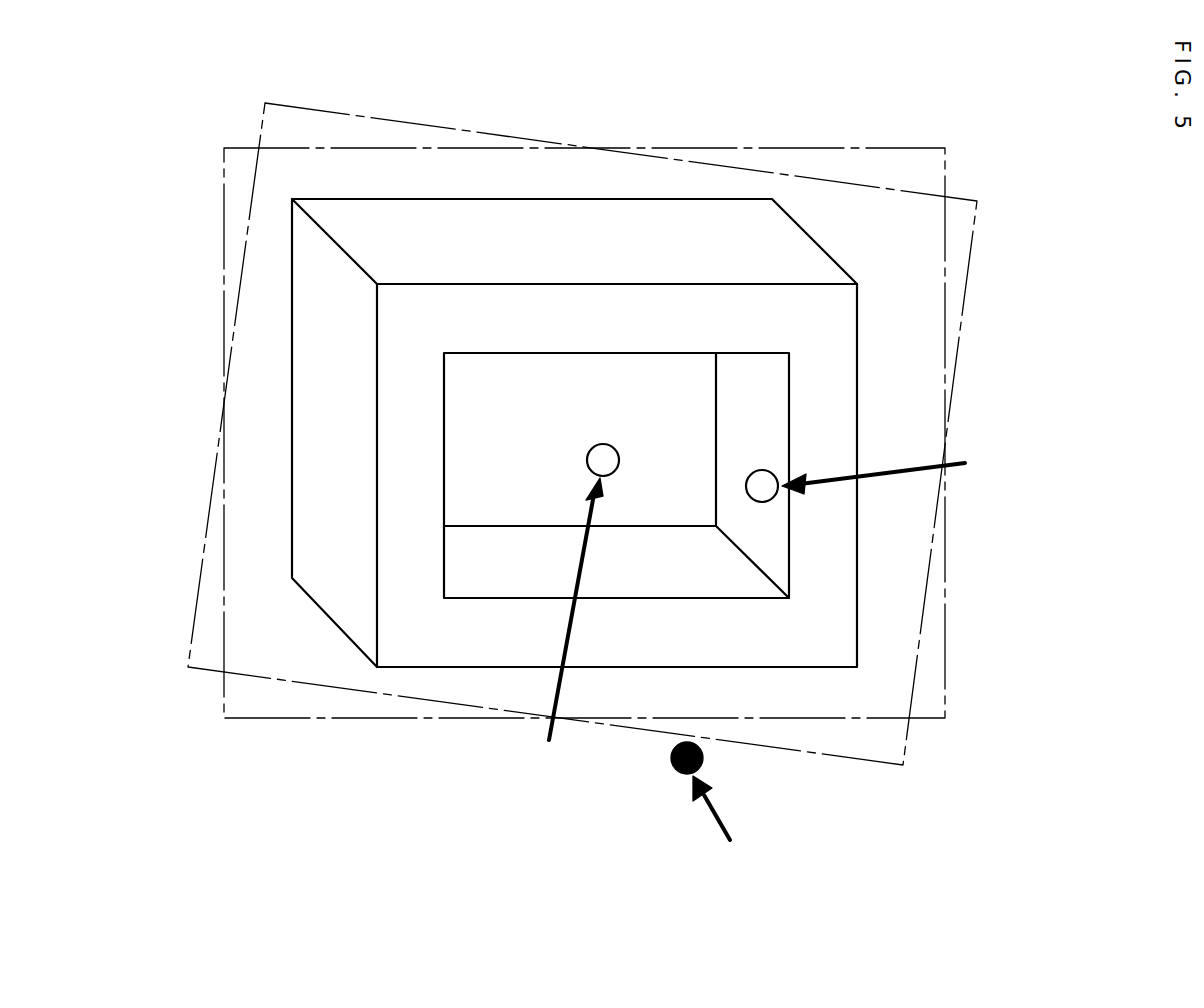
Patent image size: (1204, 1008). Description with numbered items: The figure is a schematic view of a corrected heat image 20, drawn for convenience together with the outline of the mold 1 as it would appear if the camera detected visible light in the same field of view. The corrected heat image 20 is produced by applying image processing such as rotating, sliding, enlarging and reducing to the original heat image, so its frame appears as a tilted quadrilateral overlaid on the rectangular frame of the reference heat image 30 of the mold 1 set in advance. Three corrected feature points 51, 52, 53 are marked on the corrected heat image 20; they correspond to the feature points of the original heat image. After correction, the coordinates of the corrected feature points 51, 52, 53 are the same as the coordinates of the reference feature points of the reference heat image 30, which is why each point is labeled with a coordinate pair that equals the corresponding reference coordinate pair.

The mold 1 is at (553, 210).
The corrected heat image 20 is at (398, 118).
The reference heat image 30 is at (770, 148).
The corrected feature point 51 is at (605, 455).
The corrected feature point 52 is at (762, 488).
The corrected feature point 53 is at (669, 757).